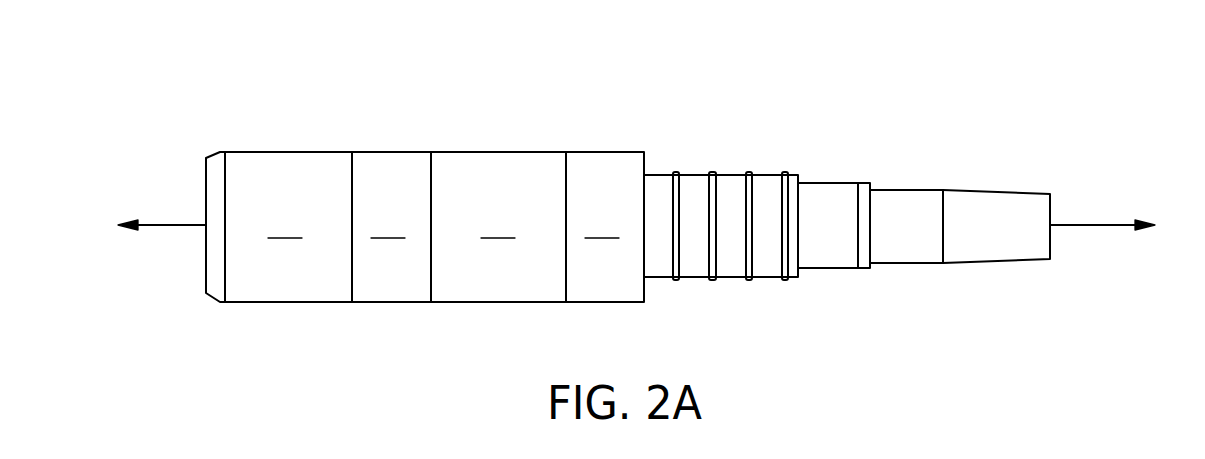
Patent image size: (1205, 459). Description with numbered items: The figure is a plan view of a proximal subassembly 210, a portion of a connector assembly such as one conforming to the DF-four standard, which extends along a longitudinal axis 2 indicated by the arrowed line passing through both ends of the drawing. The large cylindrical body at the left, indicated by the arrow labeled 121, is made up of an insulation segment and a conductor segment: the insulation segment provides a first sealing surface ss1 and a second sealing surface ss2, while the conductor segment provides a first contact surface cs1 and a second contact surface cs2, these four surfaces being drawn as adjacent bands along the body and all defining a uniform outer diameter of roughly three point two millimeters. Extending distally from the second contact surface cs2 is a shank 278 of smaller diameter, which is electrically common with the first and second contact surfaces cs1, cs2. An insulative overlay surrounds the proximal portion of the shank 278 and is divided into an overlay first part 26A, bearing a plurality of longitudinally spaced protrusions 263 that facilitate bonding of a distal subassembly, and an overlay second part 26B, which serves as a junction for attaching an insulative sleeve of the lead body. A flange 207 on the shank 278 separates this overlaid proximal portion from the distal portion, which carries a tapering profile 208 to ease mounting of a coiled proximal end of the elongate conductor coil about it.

The longitudinal axis 2 is at (165, 221).
The connector body 121 is at (197, 308).
The proximal subassembly 210 is at (362, 98).
The first sealing surface ss1 is at (285, 227).
The first contact surface cs1 is at (388, 227).
The second sealing surface ss2 is at (498, 227).
The second contact surface cs2 is at (602, 227).
The overlay first part 26A is at (690, 190).
The overlay second part 26B is at (818, 190).
The protrusions 263 is at (676, 280).
The flange 207 is at (862, 266).
The shank 278 is at (898, 165).
The tapering profile 208 is at (940, 283).